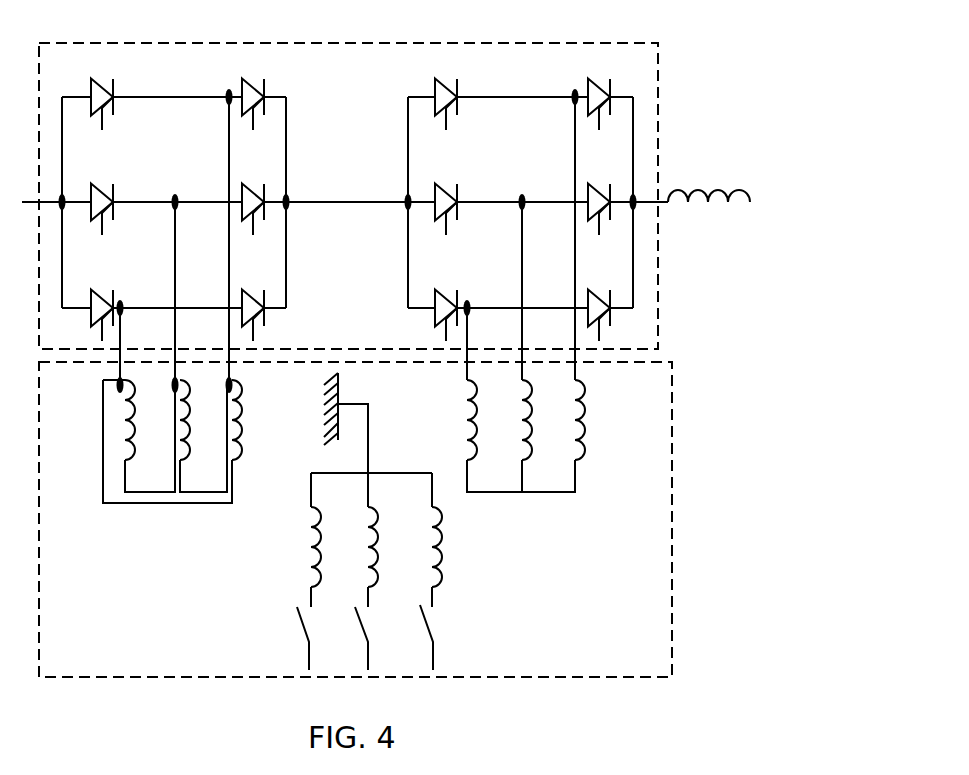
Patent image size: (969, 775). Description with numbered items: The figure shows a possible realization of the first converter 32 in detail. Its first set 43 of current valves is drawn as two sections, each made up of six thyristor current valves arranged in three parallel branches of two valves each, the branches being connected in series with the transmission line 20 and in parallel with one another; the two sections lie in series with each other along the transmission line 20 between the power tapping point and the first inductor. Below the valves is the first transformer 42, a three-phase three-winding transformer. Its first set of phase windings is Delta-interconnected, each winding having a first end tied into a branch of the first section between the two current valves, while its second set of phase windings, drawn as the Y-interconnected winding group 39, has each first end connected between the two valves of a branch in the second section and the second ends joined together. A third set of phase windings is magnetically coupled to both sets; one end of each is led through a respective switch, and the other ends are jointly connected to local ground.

The transmission line 20 is at (308, 198).
The first converter 32 is at (722, 341).
The winding group W7, W8, W9 39 is at (547, 436).
The first transformer 42 is at (672, 623).
The first set of current valves 43 is at (657, 138).